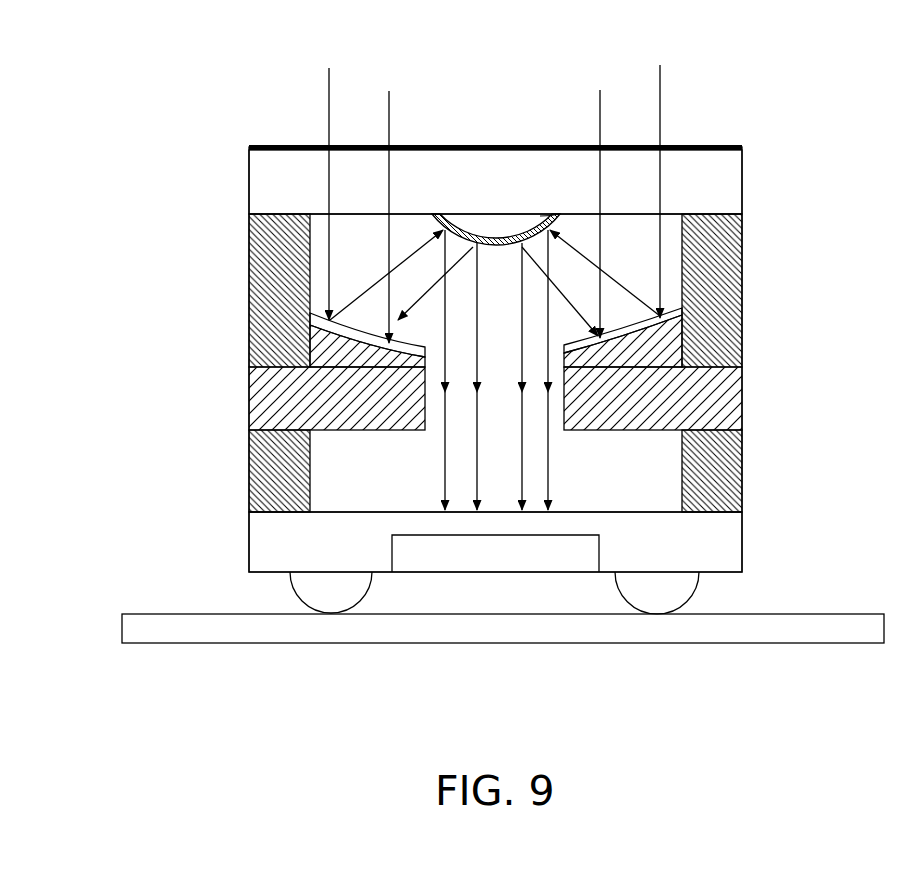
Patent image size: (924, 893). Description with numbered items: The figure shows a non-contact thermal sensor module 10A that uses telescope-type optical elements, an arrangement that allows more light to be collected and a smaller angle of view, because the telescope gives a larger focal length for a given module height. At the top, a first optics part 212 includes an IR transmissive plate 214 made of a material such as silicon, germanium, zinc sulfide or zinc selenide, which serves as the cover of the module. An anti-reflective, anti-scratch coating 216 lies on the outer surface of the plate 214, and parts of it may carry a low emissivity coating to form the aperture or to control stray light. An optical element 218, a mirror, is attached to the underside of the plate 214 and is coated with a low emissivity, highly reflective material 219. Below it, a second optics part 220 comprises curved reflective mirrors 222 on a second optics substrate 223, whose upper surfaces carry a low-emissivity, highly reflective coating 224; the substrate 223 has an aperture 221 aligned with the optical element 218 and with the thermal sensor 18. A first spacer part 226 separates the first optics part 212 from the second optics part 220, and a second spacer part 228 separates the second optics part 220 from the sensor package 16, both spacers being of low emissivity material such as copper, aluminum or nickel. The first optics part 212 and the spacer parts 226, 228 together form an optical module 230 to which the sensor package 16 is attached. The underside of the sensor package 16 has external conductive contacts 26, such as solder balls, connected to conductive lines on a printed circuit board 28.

The non-contact thermal sensor module 10A is at (805, 170).
The sensor package 16 is at (249, 545).
The thermal sensor 18 is at (488, 562).
The external conductive contacts 26 is at (315, 588).
The printed circuit board 28 is at (806, 644).
The first optics part 212 is at (218, 145).
The IR transmissive plate 214 is at (288, 172).
The anti-reflective, anti-scratch coating 216 is at (424, 145).
The optical element 218 is at (506, 212).
The low emissivity, highly reflective material 219 is at (572, 247).
The second optics part 220 is at (573, 328).
The aperture 221 is at (520, 369).
The curved reflective mirrors 222 is at (325, 348).
The second optics substrate 223 is at (268, 405).
The low-emissivity, highly reflective coating 224 is at (353, 328).
The first spacer part 226 is at (268, 277).
The second spacer part 228 is at (262, 474).
The optical module 230 is at (101, 143).